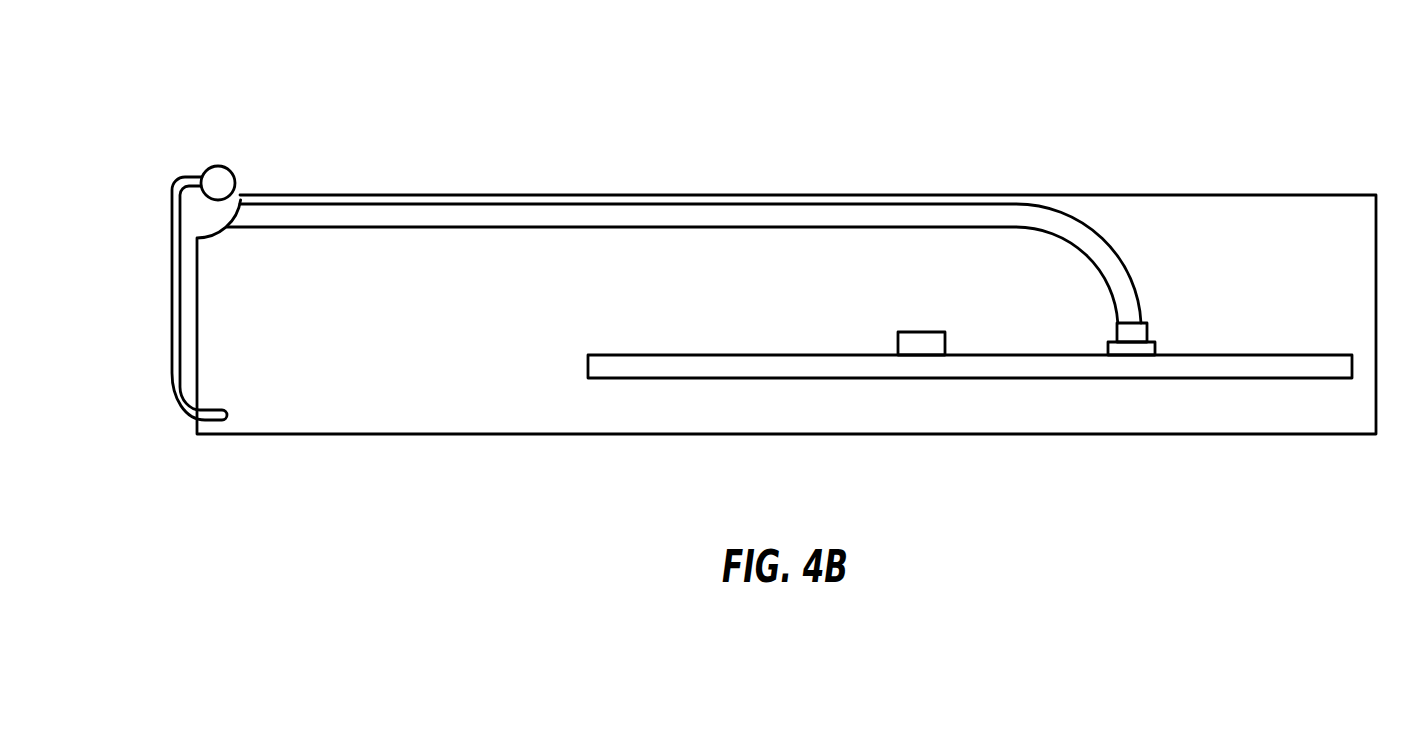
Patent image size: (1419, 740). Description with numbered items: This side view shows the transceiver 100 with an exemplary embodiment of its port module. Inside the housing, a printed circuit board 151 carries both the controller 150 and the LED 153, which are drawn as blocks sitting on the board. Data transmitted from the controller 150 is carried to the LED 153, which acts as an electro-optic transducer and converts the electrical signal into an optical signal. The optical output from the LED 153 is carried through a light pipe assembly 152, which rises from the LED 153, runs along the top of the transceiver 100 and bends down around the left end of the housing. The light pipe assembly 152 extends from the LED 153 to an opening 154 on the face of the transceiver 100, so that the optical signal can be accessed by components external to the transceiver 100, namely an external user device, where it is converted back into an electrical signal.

The transceiver 100 is at (838, 128).
The controller 150 is at (921, 332).
The printed circuit board 151 is at (997, 370).
The light pipe assembly 152 is at (484, 212).
The LED 153 is at (1150, 333).
The opening 154 is at (234, 213).